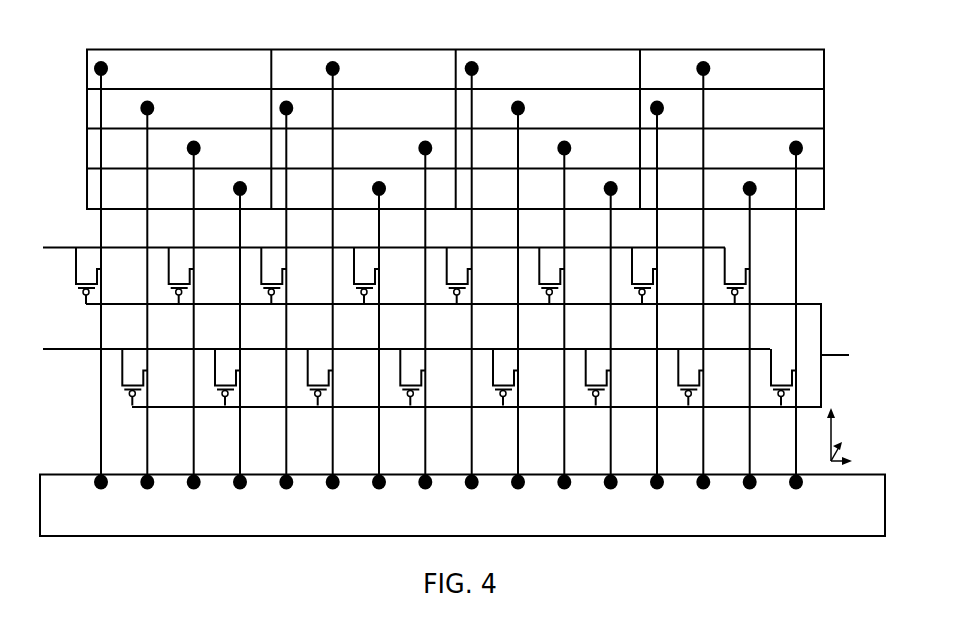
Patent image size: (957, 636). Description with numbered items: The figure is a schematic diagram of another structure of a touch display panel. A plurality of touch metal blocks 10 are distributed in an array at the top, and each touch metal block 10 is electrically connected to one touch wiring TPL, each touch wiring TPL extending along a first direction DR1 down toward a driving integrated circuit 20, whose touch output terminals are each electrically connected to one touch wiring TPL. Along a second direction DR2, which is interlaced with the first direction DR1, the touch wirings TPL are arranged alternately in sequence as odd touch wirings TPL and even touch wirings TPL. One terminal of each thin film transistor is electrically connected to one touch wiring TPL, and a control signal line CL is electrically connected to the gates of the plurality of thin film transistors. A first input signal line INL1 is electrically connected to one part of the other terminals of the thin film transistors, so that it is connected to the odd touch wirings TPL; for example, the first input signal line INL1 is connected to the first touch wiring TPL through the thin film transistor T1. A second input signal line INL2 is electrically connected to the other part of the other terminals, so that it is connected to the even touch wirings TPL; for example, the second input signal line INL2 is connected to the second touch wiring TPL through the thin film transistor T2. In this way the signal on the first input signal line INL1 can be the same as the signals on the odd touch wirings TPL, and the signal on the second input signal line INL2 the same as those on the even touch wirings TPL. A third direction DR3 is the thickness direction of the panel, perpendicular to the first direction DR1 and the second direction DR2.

The touch metal block 10 is at (170, 74).
The driving integrated circuit 20 is at (88, 474).
The touch wiring TPL is at (796, 238).
The first input signal line INL1 is at (90, 247).
The second input signal line INL2 is at (90, 349).
The thin film transistor T1 is at (413, 276).
The thin film transistor T2 is at (459, 377).
The control signal line CL is at (802, 304).
The first direction DR1 is at (841, 426).
The second direction DR2 is at (856, 462).
The third direction DR3 is at (850, 444).